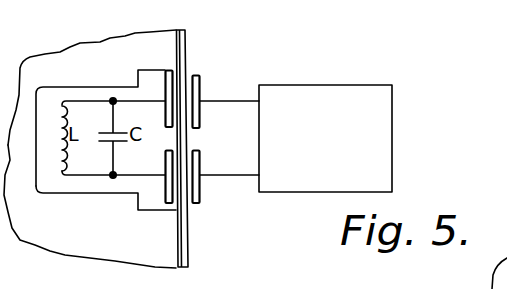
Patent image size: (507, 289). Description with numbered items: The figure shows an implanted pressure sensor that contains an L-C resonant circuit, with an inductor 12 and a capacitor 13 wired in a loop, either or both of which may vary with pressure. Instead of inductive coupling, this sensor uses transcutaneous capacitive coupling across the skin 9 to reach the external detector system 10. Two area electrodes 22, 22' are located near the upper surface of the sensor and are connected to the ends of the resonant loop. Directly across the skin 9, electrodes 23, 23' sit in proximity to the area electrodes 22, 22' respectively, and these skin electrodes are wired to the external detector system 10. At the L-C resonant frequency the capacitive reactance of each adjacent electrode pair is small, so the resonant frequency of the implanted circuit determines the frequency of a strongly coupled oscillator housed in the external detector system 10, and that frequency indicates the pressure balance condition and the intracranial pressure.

The skin 9 is at (188, 254).
The external detector system 10 is at (386, 104).
The inductor 12 is at (65, 143).
The capacitor 13 is at (125, 143).
The area electrode 22 is at (157, 81).
The electrode 23 is at (211, 80).
The area electrode 22' is at (156, 197).
The electrode 23' is at (218, 197).